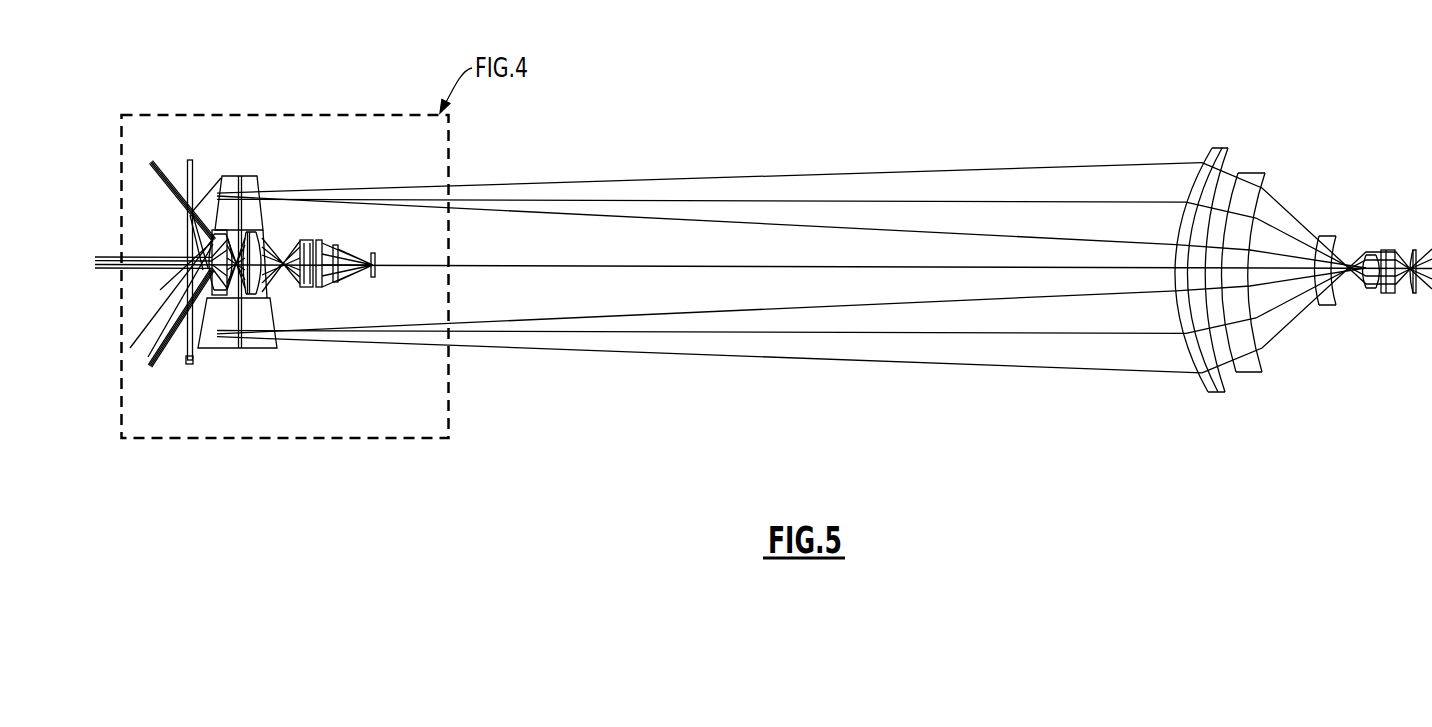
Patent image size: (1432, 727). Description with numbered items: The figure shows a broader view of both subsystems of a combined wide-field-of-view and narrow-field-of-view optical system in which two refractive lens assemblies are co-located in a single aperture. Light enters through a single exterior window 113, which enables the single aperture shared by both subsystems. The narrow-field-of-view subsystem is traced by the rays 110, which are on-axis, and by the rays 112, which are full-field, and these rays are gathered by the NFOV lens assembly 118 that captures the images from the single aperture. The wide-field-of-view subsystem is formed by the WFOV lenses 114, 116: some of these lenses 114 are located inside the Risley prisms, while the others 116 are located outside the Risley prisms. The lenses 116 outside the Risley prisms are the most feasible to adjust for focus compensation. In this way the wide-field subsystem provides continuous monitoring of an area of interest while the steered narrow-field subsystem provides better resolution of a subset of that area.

The NFOV on-axis rays 110 is at (1099, 332).
The NFOV full-field rays 112 is at (808, 226).
The exterior window 113 is at (196, 165).
The WFOV lenses inside the Risley prisms 114 is at (240, 280).
The WFOV lenses outside the Risley prisms 116 is at (322, 302).
The NFOV lens assembly 118 is at (1236, 369).